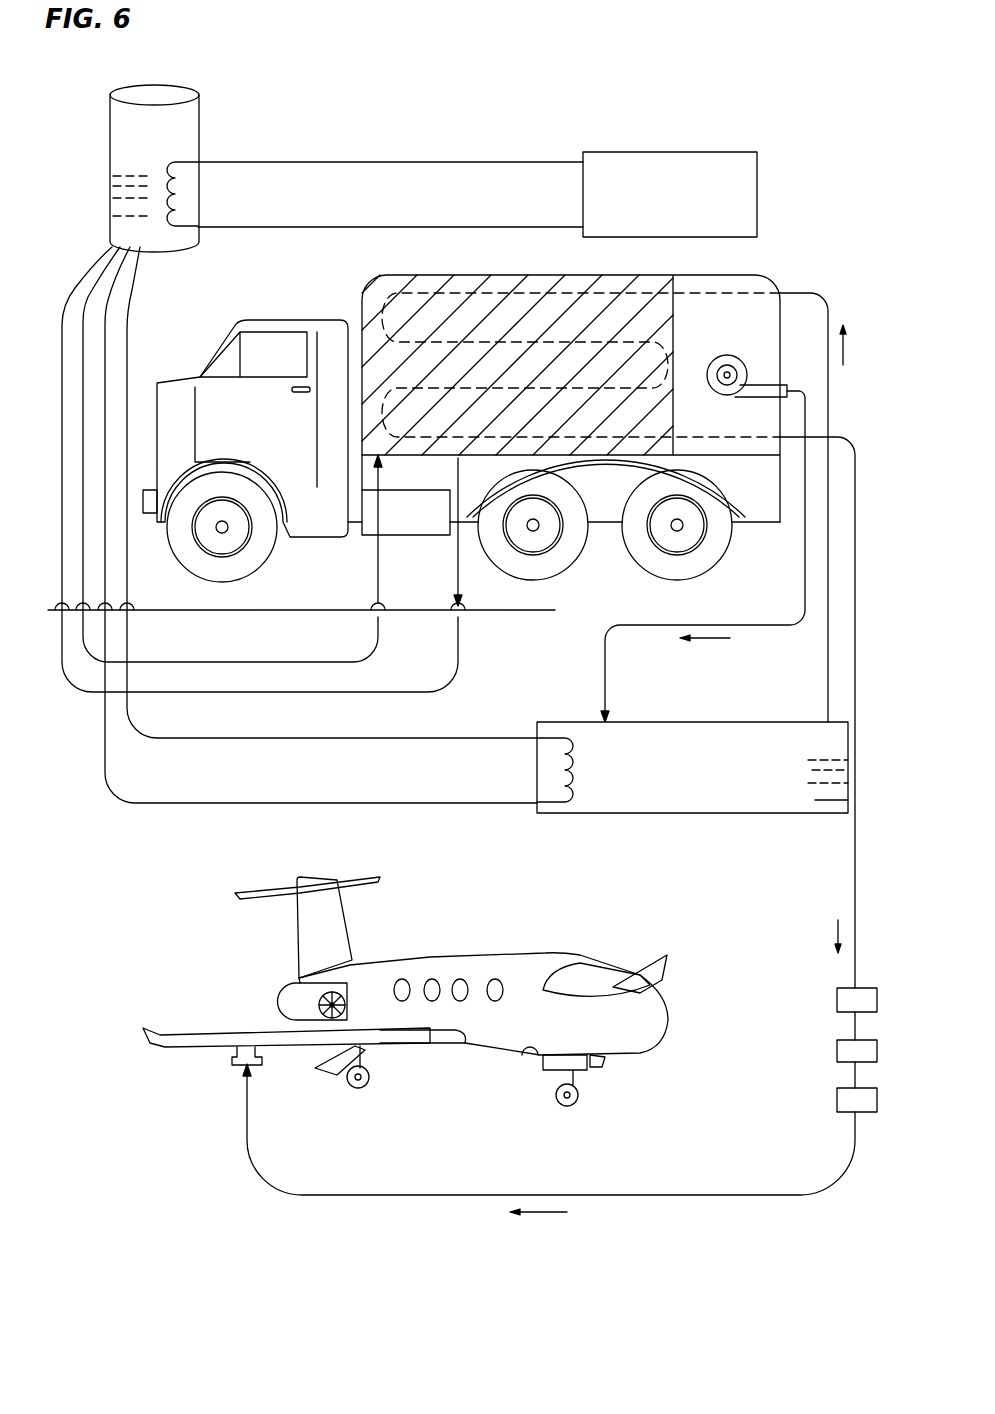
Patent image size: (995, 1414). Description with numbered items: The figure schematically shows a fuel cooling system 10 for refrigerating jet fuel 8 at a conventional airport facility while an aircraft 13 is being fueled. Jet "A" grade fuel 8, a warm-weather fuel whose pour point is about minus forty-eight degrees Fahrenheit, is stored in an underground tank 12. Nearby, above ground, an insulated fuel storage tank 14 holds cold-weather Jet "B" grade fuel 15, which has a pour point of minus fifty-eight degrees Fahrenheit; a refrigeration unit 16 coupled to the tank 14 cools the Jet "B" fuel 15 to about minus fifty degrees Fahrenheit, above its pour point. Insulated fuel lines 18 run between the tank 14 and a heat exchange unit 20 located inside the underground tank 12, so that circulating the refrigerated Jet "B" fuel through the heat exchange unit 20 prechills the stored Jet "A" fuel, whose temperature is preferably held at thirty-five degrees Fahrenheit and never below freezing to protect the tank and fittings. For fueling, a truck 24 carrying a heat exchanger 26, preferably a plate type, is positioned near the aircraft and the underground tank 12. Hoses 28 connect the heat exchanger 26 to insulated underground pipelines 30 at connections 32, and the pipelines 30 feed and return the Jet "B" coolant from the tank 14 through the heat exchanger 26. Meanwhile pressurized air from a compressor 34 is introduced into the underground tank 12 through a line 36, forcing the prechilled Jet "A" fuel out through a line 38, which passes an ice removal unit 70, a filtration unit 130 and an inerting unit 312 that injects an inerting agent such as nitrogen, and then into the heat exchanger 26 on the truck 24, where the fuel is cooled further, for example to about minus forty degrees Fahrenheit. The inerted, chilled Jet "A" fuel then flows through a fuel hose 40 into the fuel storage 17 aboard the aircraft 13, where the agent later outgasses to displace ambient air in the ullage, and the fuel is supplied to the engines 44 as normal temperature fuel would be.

The Jet "A" grade fuel 8 is at (832, 792).
The fuel cooling system 10 is at (588, 146).
The underground tank 12 is at (680, 722).
The aircraft 13 is at (665, 1036).
The insulated fuel storage tank 14 is at (186, 93).
The Jet "B" grade fuel 15 is at (112, 194).
The refrigeration unit 16 is at (755, 181).
The fuel storage 17 is at (232, 1038).
The insulated fuel lines 18 is at (150, 335).
The heat exchange unit 20 is at (578, 784).
The truck 24 is at (290, 325).
The heat exchanger 26 is at (455, 275).
The hoses 28 is at (428, 562).
The insulated underground pipelines 30 is at (232, 661).
The connections 32 is at (463, 606).
The compressor 34 is at (722, 357).
The line 36 is at (805, 540).
The line 38 is at (828, 691).
The fuel hose 40 is at (712, 1196).
The engines 44 is at (278, 997).
The ice removal unit 70 is at (837, 1001).
The filtration unit 130 is at (837, 1051).
The inerting unit 312 is at (837, 1101).